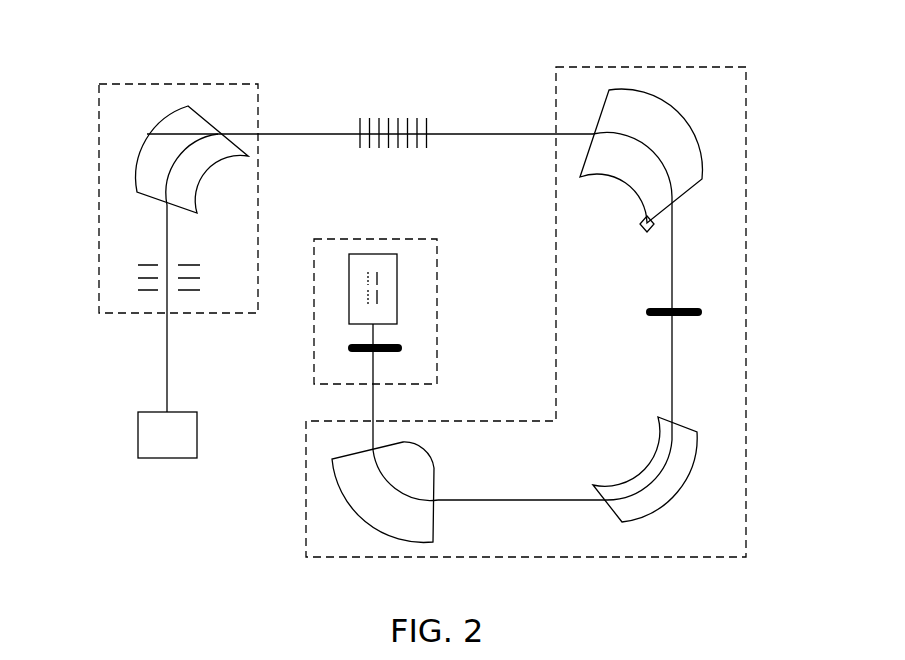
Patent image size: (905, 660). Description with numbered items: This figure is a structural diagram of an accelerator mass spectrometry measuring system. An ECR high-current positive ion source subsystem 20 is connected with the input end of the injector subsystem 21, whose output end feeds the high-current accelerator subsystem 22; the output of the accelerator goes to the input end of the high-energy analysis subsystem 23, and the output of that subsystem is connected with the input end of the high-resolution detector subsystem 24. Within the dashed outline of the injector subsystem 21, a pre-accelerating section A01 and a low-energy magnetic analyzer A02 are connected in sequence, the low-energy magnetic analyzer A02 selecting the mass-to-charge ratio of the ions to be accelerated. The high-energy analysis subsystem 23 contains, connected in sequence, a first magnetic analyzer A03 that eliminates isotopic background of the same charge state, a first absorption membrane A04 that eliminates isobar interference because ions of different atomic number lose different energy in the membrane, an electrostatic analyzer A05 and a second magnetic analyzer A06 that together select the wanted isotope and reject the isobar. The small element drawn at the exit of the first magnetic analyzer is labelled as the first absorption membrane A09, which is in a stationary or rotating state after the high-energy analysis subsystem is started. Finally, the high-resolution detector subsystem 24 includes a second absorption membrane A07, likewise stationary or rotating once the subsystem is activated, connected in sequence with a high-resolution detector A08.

The ECR high-current positive ion source subsystem 20 is at (137, 437).
The injector subsystem 21 is at (99, 84).
The high-current accelerator subsystem 22 is at (390, 118).
The high-energy analysis subsystem 23 is at (555, 67).
The high-resolution detector subsystem 24 is at (410, 239).
The pre-accelerating section A01 is at (137, 270).
The low-energy magnetic analyzer A02 is at (148, 142).
The first magnetic analyzer A03 is at (673, 155).
The first absorption membrane A04 is at (702, 311).
The electrostatic analyzer A05 is at (697, 432).
The second magnetic analyzer A06 is at (360, 492).
The second absorption membrane A07 is at (402, 347).
The high-resolution detector A08 is at (397, 290).
The first absorption membrane A09 is at (650, 222).